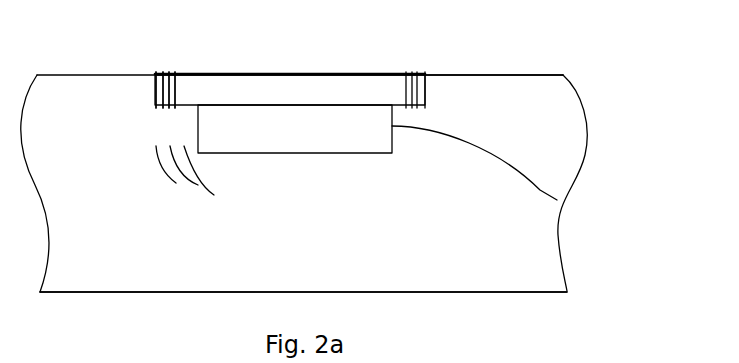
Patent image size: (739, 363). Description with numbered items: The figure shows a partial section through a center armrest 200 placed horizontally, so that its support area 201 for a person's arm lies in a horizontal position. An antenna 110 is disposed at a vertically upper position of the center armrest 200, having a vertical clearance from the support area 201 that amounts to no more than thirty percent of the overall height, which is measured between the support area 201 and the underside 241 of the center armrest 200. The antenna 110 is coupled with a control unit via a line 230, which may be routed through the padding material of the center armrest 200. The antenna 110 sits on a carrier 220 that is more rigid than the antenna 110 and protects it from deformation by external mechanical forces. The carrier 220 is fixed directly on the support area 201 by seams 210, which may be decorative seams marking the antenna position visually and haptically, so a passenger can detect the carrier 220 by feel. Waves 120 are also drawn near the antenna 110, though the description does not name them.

The center armrest 200 is at (572, 256).
The support area 201 is at (452, 72).
The seams 210 is at (172, 63).
The carrier 220 is at (147, 93).
The antenna 110 is at (263, 160).
The acoustic waves 120 is at (173, 193).
The line 230 is at (470, 133).
The underside 241 is at (475, 292).